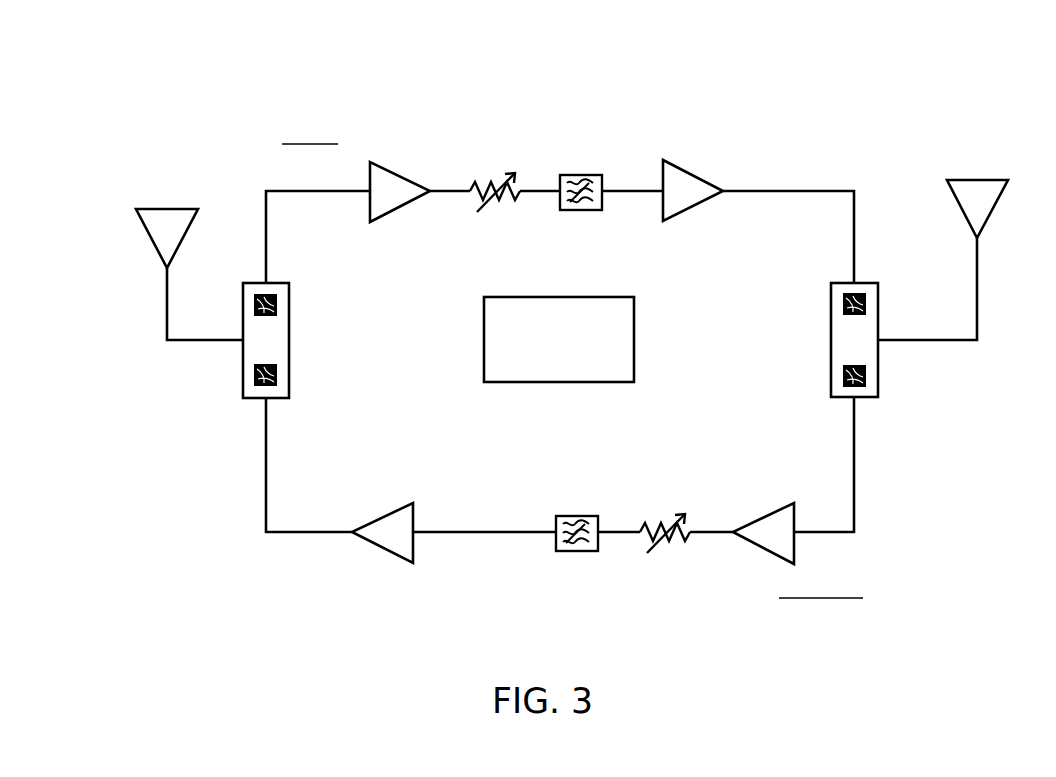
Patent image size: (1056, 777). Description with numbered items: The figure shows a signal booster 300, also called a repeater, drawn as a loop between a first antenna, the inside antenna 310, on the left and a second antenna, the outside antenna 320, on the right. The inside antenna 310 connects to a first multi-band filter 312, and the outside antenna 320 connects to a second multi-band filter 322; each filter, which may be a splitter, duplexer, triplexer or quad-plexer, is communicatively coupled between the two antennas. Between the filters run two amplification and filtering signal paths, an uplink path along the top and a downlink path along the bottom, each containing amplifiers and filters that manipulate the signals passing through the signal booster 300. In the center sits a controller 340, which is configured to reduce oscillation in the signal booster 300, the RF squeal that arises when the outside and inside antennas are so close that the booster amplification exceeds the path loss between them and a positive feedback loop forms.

The signal booster 300 is at (164, 69).
The inside antenna 310 is at (168, 242).
The first multi-band filter 312 is at (289, 381).
The outside antenna 320 is at (965, 232).
The second multi-band filter 322 is at (878, 379).
The controller 340 is at (576, 361).